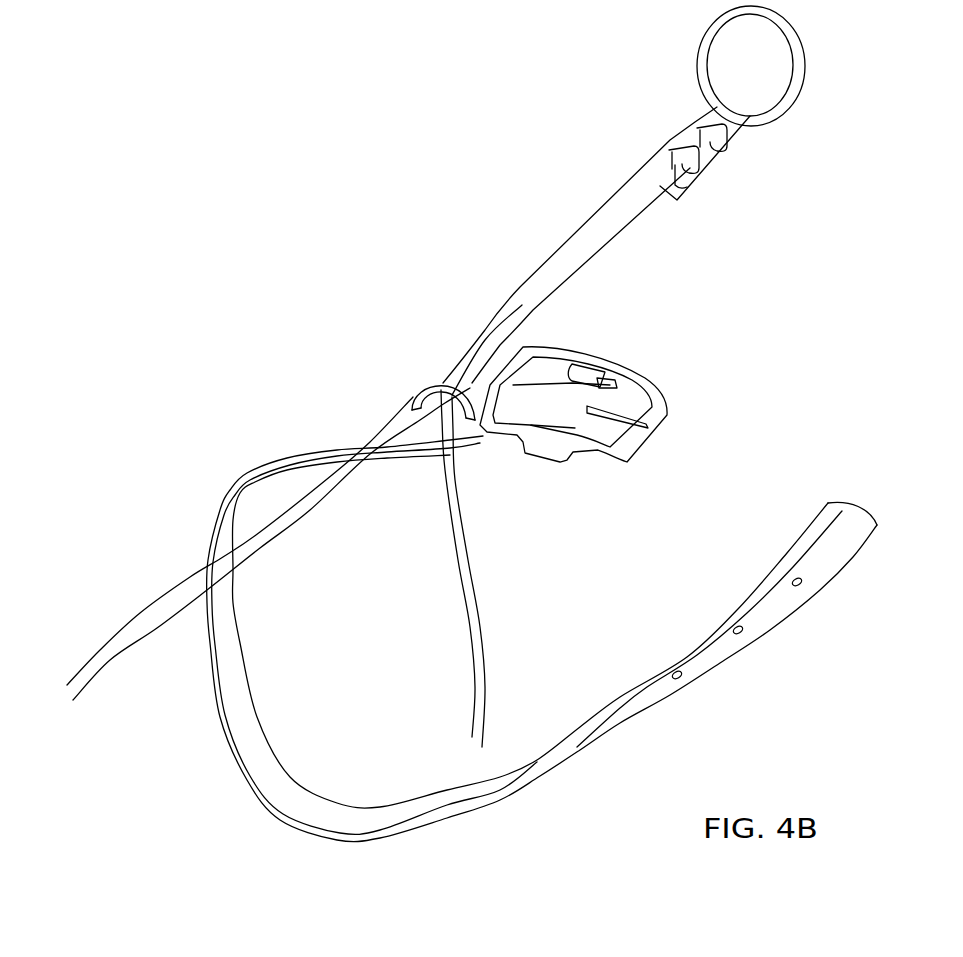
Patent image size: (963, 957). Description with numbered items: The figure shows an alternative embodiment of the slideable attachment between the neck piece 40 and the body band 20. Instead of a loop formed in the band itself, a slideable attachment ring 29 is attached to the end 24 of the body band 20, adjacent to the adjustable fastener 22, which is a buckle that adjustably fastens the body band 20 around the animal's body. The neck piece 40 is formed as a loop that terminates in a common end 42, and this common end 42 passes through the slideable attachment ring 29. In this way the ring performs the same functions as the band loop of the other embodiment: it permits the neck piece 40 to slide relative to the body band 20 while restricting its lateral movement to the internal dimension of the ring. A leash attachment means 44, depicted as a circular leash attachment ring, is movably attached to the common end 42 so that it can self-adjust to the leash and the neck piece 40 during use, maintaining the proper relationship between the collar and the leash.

The body band 20 is at (357, 445).
The adjustable fastener 22 is at (513, 368).
The first end of the body band 24 is at (538, 407).
The slideable attachment ring 29 is at (425, 396).
The neck piece 40 is at (473, 688).
The common end 42 is at (697, 178).
The leash attachment means 44 is at (790, 92).